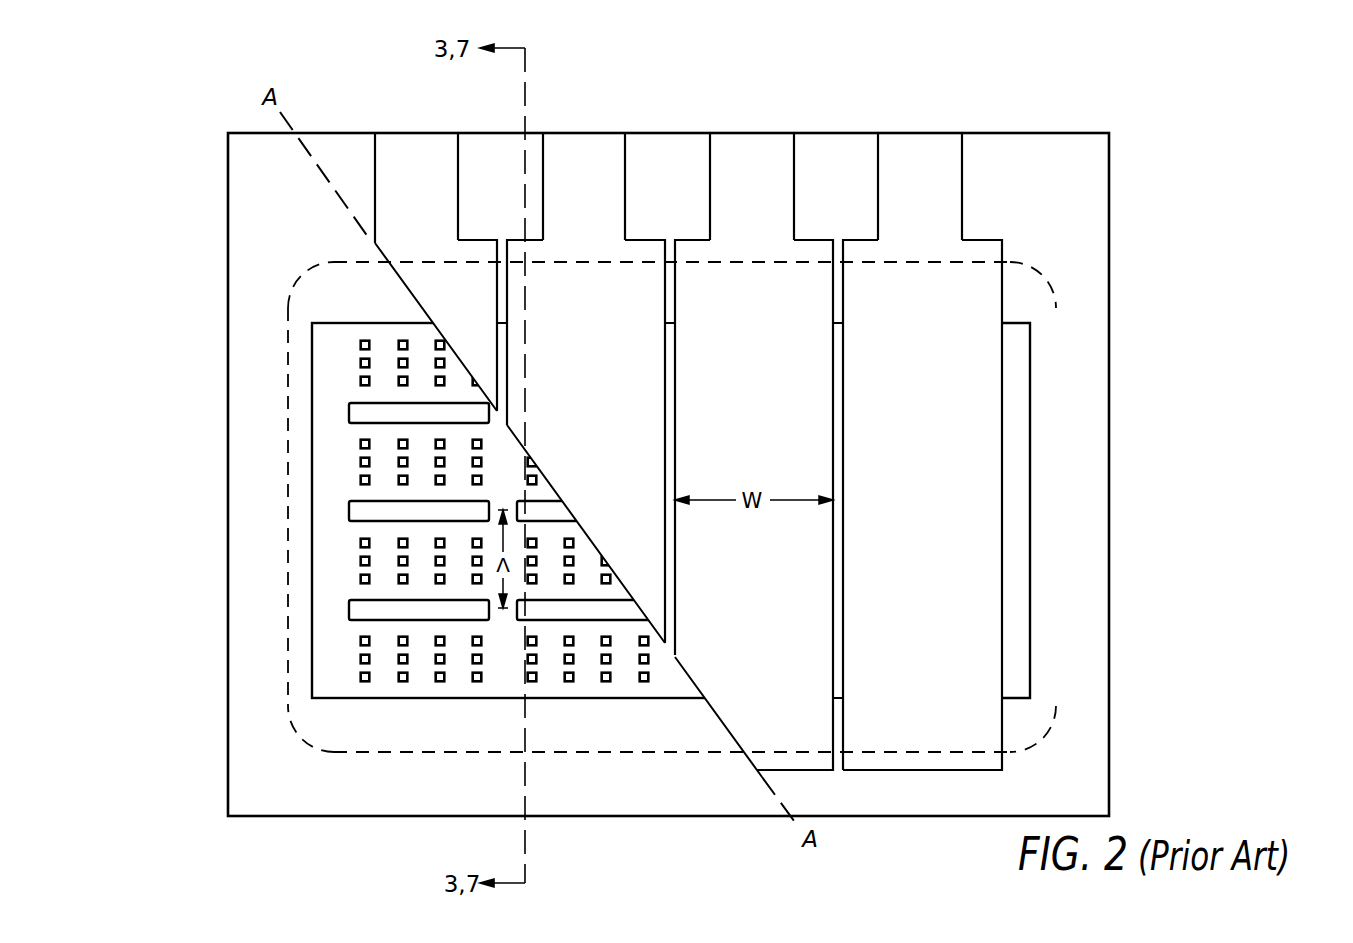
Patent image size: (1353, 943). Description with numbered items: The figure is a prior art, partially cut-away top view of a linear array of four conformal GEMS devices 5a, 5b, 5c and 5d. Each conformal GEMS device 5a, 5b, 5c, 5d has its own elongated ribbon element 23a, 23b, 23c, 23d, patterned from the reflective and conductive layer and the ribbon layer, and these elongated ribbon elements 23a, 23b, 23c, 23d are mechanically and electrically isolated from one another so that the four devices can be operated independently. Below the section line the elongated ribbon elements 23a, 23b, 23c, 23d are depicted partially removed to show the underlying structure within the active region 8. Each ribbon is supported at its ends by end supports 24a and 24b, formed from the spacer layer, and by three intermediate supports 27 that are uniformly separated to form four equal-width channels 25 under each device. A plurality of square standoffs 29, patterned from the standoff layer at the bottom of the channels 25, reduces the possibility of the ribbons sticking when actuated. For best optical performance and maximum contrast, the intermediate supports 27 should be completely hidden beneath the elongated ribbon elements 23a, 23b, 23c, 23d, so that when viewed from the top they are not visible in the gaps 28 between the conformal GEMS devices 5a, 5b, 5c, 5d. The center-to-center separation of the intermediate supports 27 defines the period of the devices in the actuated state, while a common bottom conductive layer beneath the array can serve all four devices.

The conformal GEMS device 5a is at (350, 118).
The conformal GEMS device 5b is at (515, 118).
The conformal GEMS device 5c is at (680, 118).
The conformal GEMS device 5d is at (847, 118).
The elongated ribbon element 23a is at (438, 205).
The elongated ribbon element 23b is at (609, 205).
The elongated ribbon element 23c is at (776, 205).
The elongated ribbon element 23d is at (946, 205).
The end support 24a is at (1010, 303).
The end support 24b is at (1013, 716).
The channel 25 is at (330, 356).
The intermediate support 27 is at (352, 410).
The gap 28 is at (505, 346).
The square standoff 29 is at (365, 683).
The active region 8 is at (306, 737).